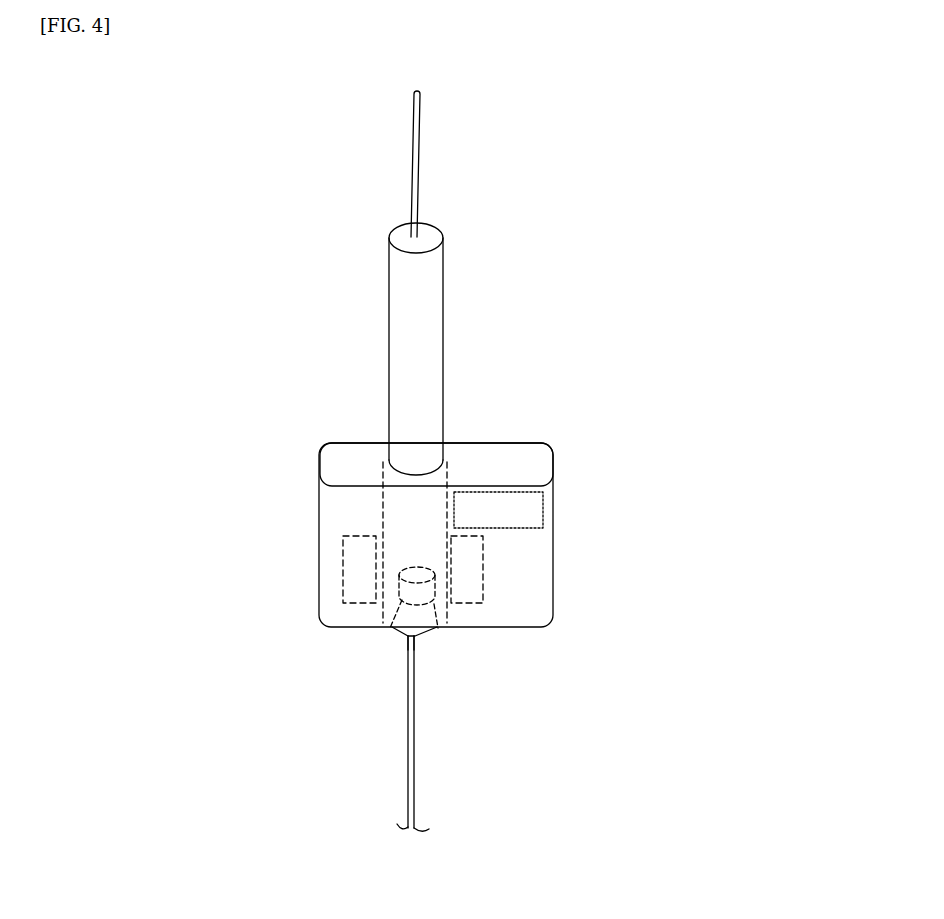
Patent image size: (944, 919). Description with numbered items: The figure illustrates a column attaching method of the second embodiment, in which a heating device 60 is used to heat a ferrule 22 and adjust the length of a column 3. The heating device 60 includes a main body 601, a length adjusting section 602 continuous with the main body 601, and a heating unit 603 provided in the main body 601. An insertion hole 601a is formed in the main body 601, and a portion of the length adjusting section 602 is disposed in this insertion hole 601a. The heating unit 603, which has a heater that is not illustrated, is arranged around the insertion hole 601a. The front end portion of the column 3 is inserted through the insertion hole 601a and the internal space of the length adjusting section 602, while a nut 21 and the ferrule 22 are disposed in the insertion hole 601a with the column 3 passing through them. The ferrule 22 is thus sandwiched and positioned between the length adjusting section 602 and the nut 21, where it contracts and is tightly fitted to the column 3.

The heating device 60 is at (592, 462).
The main body 601 is at (517, 443).
The insertion hole 601a is at (428, 632).
The length adjusting section 602 is at (443, 307).
The heating unit 603 is at (343, 577).
The nut 21 is at (400, 634).
The ferrule 22 is at (388, 629).
The column 3 is at (415, 782).